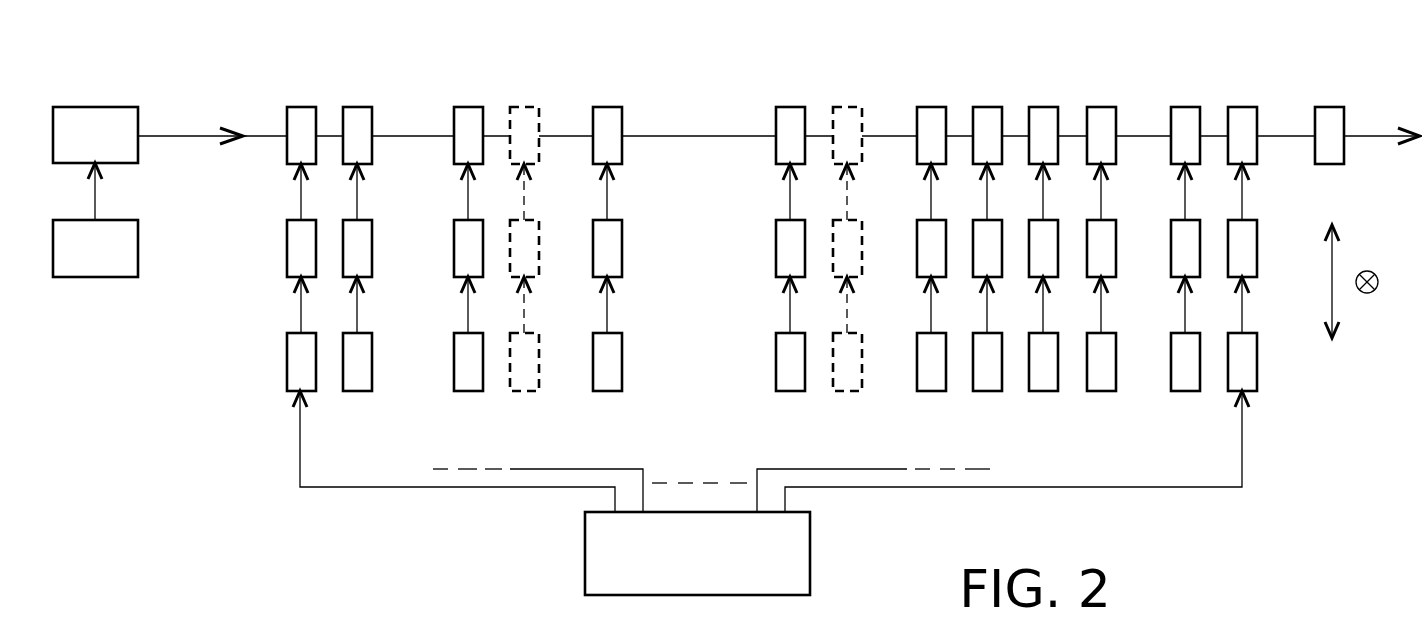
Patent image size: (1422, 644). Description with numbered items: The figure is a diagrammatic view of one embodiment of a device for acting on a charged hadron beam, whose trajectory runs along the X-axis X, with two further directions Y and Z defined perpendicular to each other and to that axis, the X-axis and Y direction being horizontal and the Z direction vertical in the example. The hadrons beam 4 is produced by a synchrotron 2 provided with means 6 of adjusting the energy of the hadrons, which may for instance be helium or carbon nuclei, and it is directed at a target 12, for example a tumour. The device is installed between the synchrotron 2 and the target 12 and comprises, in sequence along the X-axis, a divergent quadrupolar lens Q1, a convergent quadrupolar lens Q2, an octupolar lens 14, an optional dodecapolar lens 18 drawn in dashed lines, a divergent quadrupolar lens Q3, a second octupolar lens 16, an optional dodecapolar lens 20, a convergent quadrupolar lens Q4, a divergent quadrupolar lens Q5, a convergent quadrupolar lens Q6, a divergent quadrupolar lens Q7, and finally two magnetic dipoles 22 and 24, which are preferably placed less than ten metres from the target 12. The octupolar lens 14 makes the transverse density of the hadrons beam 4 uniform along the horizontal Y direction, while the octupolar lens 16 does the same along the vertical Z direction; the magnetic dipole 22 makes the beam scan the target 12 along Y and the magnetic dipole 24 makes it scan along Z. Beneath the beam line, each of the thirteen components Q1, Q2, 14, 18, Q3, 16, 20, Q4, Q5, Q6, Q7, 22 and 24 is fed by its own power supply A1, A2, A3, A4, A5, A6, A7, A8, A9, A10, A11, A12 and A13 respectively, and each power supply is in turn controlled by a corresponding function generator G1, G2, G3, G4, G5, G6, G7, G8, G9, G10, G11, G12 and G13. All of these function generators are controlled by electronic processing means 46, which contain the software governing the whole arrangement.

The synchrotron 2 is at (102, 107).
The hadrons beam 4 is at (195, 136).
The means of adjusting the energy of the hadrons 6 is at (100, 277).
The target 12 is at (1329, 107).
The octupolar lens 14 is at (468, 107).
The octupolar lens 16 is at (790, 107).
The dodecapolar lens 18 is at (524, 107).
The dodecapolar lens 20 is at (847, 107).
The magnetic dipole 22 is at (1185, 107).
The magnetic dipole 24 is at (1242, 107).
The electronic processing means 46 is at (585, 561).
The quadrupolar lens Q1 is at (300, 107).
The quadrupolar lens Q2 is at (358, 107).
The quadrupolar lens Q3 is at (607, 107).
The quadrupolar lens Q4 is at (931, 107).
The quadrupolar lens Q5 is at (987, 107).
The quadrupolar lens Q6 is at (1043, 107).
The quadrupolar lens Q7 is at (1101, 107).
The power supply A1 is at (294, 247).
The power supply A2 is at (364, 240).
The power supply A3 is at (465, 268).
The power supply A4 is at (530, 253).
The power supply A5 is at (612, 242).
The power supply A6 is at (785, 248).
The power supply A7 is at (858, 223).
The power supply A8 is at (921, 269).
The power supply A9 is at (980, 237).
The power supply A10 is at (1037, 232).
The power supply A11 is at (1108, 233).
The power supply A12 is at (1177, 268).
The power supply A13 is at (1253, 256).
The function generator G1 is at (293, 363).
The function generator G2 is at (365, 349).
The function generator G3 is at (465, 380).
The function generator G4 is at (530, 365).
The function generator G5 is at (614, 350).
The function generator G6 is at (780, 353).
The function generator G7 is at (856, 368).
The function generator G8 is at (929, 391).
The function generator G9 is at (986, 391).
The function generator G10 is at (1043, 391).
The function generator G11 is at (1100, 391).
The function generator G12 is at (1183, 391).
The function generator G13 is at (1252, 376).
The X-axis X is at (258, 136).
The Y direction Y is at (1367, 293).
The Z direction Z is at (1332, 265).